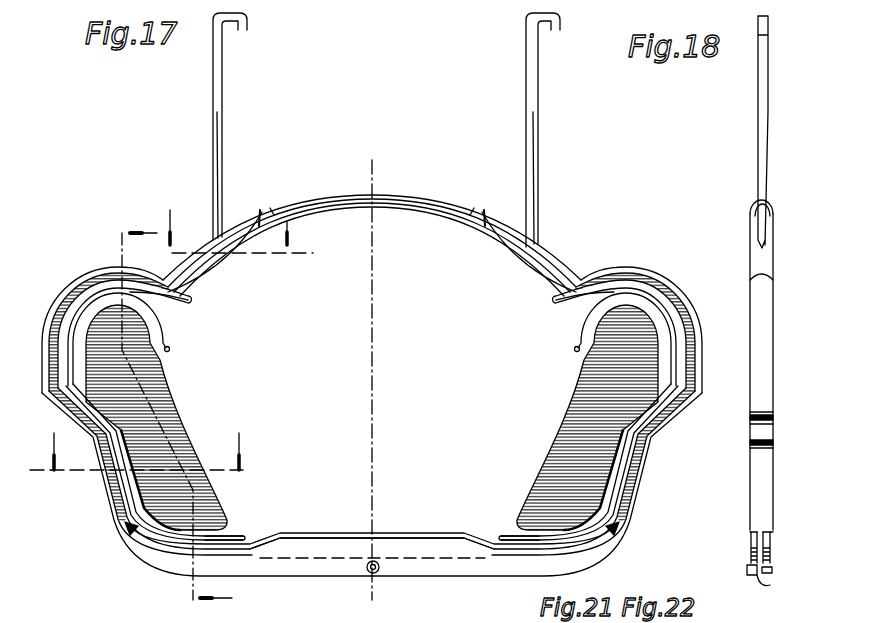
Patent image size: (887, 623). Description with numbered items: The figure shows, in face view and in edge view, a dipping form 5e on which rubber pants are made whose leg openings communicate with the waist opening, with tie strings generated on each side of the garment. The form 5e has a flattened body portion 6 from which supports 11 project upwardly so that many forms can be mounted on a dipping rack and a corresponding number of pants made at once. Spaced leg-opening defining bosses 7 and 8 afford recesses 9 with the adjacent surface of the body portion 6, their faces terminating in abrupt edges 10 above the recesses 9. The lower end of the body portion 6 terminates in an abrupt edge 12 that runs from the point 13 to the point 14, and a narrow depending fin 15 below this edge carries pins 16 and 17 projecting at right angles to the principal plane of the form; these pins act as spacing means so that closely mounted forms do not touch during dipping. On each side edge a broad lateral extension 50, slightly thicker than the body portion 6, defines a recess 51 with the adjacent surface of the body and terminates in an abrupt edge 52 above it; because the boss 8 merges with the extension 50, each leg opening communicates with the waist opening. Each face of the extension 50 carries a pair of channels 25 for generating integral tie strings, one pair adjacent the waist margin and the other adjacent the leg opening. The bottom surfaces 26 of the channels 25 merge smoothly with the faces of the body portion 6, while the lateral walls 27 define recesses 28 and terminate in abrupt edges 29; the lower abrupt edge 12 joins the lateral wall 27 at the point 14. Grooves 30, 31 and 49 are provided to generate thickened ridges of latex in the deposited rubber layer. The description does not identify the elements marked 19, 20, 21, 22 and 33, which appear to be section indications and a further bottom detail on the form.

In FIG. 17, the form 5e is at (453, 204).
In FIG. 18, the form 5e is at (775, 255).
In FIG. 17, the body portion 6 is at (400, 213).
In FIG. 18, the body portion 6 is at (774, 216).
In FIG. 17, the leg-opening defining boss 7 is at (237, 220).
In FIG. 17, the leg-opening defining boss 8 is at (503, 228).
In FIG. 17, the recess 9 is at (274, 212).
In FIG. 17, the abrupt edge 10 is at (261, 208).
In FIG. 17, the support 11 is at (535, 102).
In FIG. 18, the support 11 is at (765, 88).
In FIG. 17, the abrupt edge 12 is at (418, 545).
In FIG. 17, the point 13 is at (140, 537).
In FIG. 17, the point 14 is at (610, 537).
In FIG. 18, the point 14 is at (773, 538).
In FIG. 17, the depending fin 15 is at (478, 571).
In FIG. 18, the depending fin 15 is at (770, 583).
In FIG. 17, the pin 16 is at (365, 576).
In FIG. 18, the pin 16 is at (745, 568).
In FIG. 18, the pin 17 is at (772, 570).
In FIG. 17, the section line 19- 19 is at (228, 237).
In FIG. 17, the section line 20- 20 is at (146, 457).
In FIG. 17, the section line 21- 21 is at (172, 417).
In FIG. 17, the section line 22- 22 is at (422, 162).
In FIG. 18, the section line 22- 22 is at (775, 198).
In FIG. 17, the channel 25 is at (120, 517).
In FIG. 17, the bottom surface 26 is at (160, 560).
In FIG. 17, the lateral wall 27 is at (108, 497).
In FIG. 17, the recess 28 is at (107, 488).
In FIG. 17, the abrupt edge 29 is at (110, 473).
In FIG. 17, the groove 30 is at (353, 540).
In FIG. 17, the groove 31 is at (238, 533).
In FIG. 17, the bottom groove 33 is at (292, 545).
In FIG. 17, the groove 49 is at (186, 304).
In FIG. 17, the lateral extension 50 is at (88, 271).
In FIG. 18, the lateral extension 50 is at (775, 307).
In FIG. 17, the recess 51 is at (187, 440).
In FIG. 17, the abrupt edge 52 is at (173, 417).